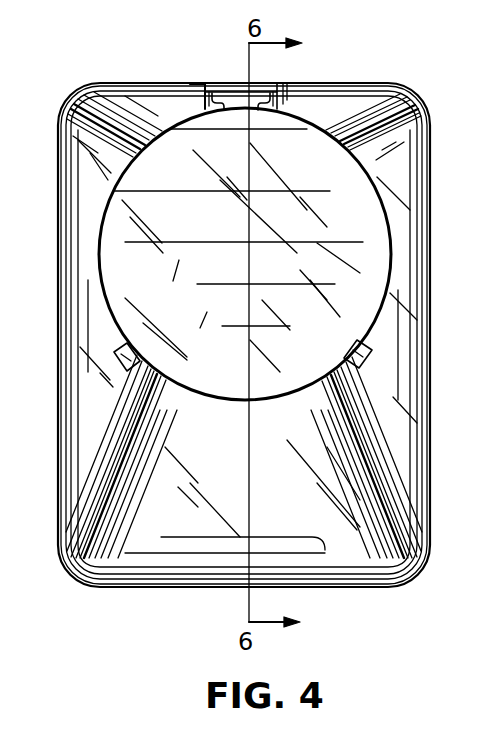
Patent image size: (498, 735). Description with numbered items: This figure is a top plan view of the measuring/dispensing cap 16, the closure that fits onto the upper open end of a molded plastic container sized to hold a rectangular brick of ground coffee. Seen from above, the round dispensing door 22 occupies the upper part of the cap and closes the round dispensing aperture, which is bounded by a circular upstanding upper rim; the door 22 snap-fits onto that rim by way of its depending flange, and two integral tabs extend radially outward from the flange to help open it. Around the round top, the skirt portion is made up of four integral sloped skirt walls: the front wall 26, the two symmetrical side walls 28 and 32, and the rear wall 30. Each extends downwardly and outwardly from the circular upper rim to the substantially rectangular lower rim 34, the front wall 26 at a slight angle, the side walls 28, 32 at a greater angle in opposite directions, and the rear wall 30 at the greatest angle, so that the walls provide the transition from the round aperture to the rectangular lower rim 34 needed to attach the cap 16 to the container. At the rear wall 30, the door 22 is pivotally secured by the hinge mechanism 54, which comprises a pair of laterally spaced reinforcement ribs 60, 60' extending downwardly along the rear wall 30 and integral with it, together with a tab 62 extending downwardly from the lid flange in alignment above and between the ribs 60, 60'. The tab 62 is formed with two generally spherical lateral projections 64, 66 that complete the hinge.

The measuring/dispensing cap 16 is at (54, 408).
The dispensing door 22 is at (356, 252).
The front skirt wall 26 is at (325, 550).
The side skirt wall 28 is at (390, 380).
The rear skirt wall 30 is at (334, 103).
The side skirt wall 32 is at (82, 330).
The lower rim 34 is at (431, 176).
The hinge mechanism 54 is at (234, 78).
The reinforcement rib 60 is at (312, 74).
The reinforcement rib 60' is at (178, 50).
The tab 62 is at (259, 88).
The lateral projection 64 is at (213, 100).
The lateral projection 66 is at (272, 100).